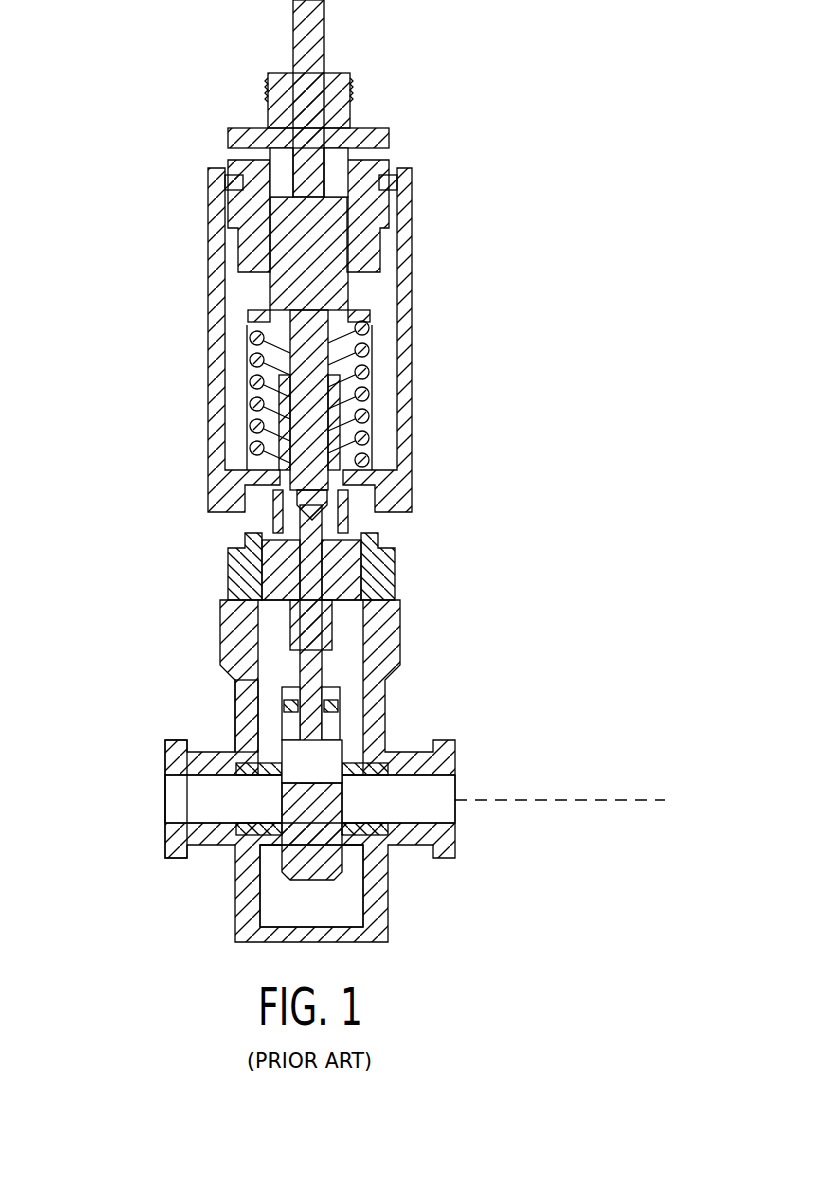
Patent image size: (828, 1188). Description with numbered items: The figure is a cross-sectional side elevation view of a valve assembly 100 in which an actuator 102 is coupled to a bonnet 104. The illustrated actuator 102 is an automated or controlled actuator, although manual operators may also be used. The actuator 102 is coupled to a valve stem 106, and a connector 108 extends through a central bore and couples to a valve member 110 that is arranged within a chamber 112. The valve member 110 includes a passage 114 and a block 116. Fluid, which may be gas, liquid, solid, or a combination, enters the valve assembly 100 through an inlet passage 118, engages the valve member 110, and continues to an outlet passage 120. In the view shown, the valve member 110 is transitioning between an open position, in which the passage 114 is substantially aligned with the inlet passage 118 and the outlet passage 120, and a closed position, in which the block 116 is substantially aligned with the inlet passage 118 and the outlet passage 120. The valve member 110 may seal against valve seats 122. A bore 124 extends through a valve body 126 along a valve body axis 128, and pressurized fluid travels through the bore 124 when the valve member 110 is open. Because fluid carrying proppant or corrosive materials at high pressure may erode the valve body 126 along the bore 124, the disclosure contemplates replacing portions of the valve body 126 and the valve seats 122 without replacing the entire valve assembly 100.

The valve assembly 100 is at (150, 664).
The actuator 102 is at (150, 284).
The bonnet 104 is at (412, 581).
The valve stem 106 is at (313, 508).
The connector 108 is at (315, 457).
The valve member 110 is at (278, 860).
The chamber 112 is at (353, 907).
The passage 114 is at (322, 753).
The block 116 is at (330, 865).
The inlet passage 118 is at (185, 825).
The outlet passage 120 is at (445, 805).
The valve seats 122 is at (247, 772).
The bore 124 is at (188, 785).
The valve body 126 is at (377, 708).
The valve body axis 128 is at (608, 800).